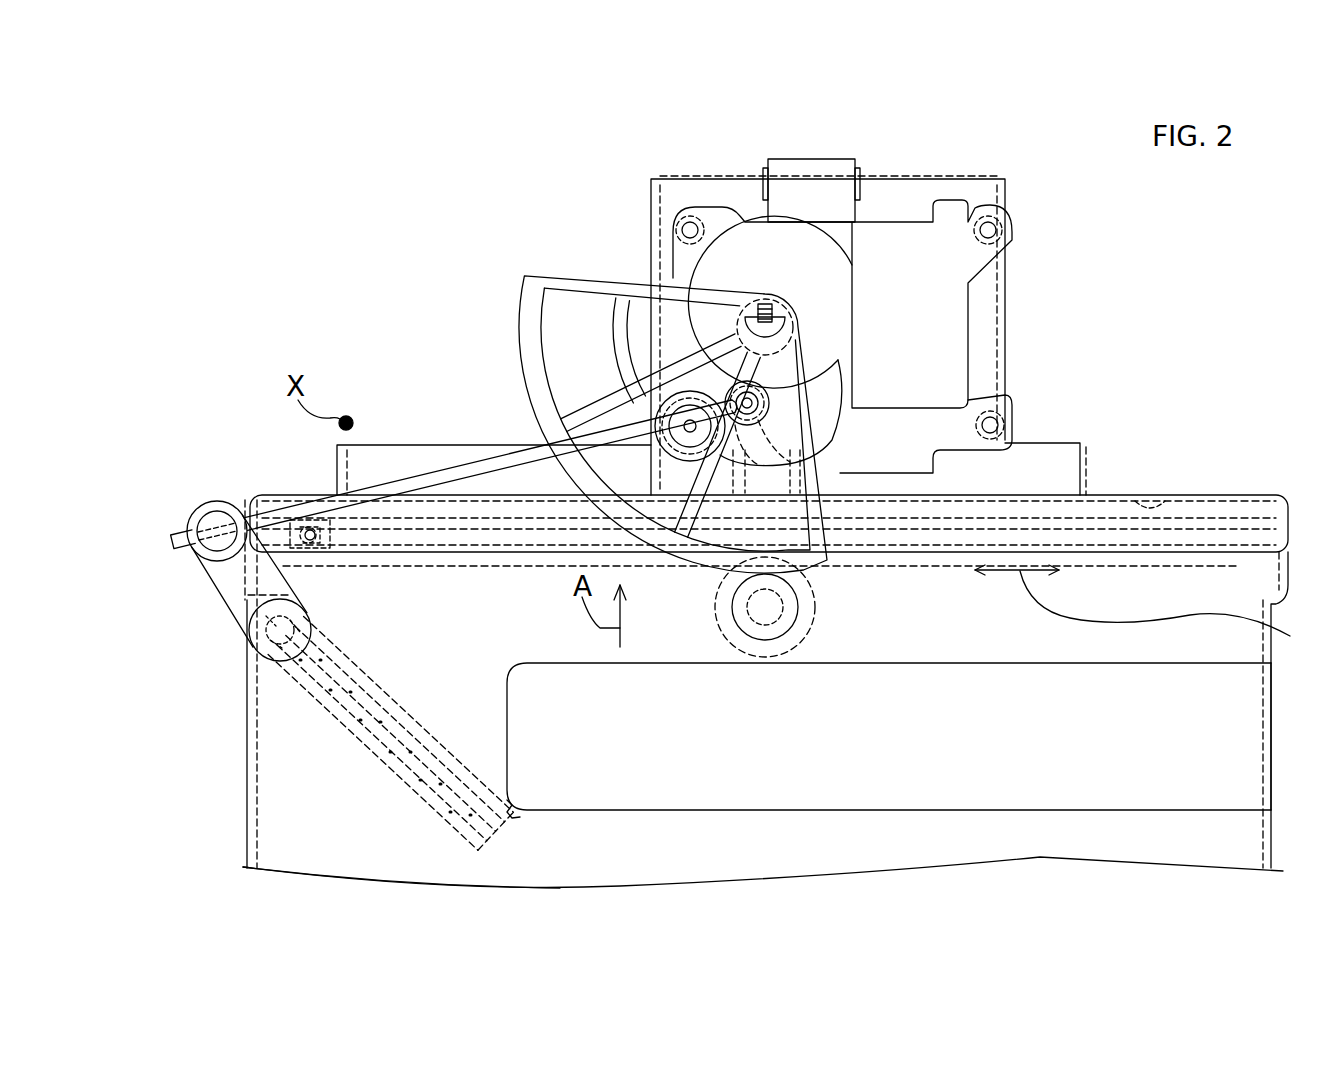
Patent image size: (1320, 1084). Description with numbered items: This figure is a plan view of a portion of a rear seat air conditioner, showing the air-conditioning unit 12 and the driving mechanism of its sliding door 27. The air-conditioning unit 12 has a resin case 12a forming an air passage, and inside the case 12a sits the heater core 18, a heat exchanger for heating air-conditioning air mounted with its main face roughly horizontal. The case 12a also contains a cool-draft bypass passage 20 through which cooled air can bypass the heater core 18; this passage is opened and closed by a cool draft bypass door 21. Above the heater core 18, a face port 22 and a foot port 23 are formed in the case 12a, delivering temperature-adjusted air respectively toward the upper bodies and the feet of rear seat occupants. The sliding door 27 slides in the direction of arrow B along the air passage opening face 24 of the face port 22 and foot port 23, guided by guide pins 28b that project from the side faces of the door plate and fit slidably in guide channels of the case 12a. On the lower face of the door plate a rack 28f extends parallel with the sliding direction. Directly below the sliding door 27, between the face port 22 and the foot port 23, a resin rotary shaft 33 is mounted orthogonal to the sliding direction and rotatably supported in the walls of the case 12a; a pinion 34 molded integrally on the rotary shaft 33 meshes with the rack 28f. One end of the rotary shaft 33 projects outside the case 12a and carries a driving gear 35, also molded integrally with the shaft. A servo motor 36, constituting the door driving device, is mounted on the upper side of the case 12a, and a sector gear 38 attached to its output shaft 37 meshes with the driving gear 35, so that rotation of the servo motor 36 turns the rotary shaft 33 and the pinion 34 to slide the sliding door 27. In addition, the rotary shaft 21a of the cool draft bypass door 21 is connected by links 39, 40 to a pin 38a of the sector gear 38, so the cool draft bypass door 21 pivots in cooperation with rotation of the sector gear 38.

The air-conditioning unit 12 is at (233, 683).
The resin case 12a is at (247, 727).
The heater core 18 is at (1143, 748).
The cool-draft bypass passage 20 is at (363, 773).
The cool draft bypass door 21 is at (352, 722).
The rotary shaft of cool draft bypass door 21a is at (248, 650).
The face port 22 is at (421, 446).
The foot port 23 is at (1063, 442).
The air passage opening face 24 is at (1151, 506).
The sliding door 27 is at (372, 540).
The guide pins 28b is at (267, 498).
The rack 28f is at (533, 567).
The rotary shaft 33 is at (787, 620).
The pinion 34 is at (817, 617).
The driving gear 35 is at (773, 640).
The servo motor 36 is at (820, 164).
The output shaft 37 is at (770, 333).
The sector gear 38 is at (561, 283).
The pin 38a is at (753, 403).
The link 39 is at (216, 585).
The link 40 is at (483, 458).